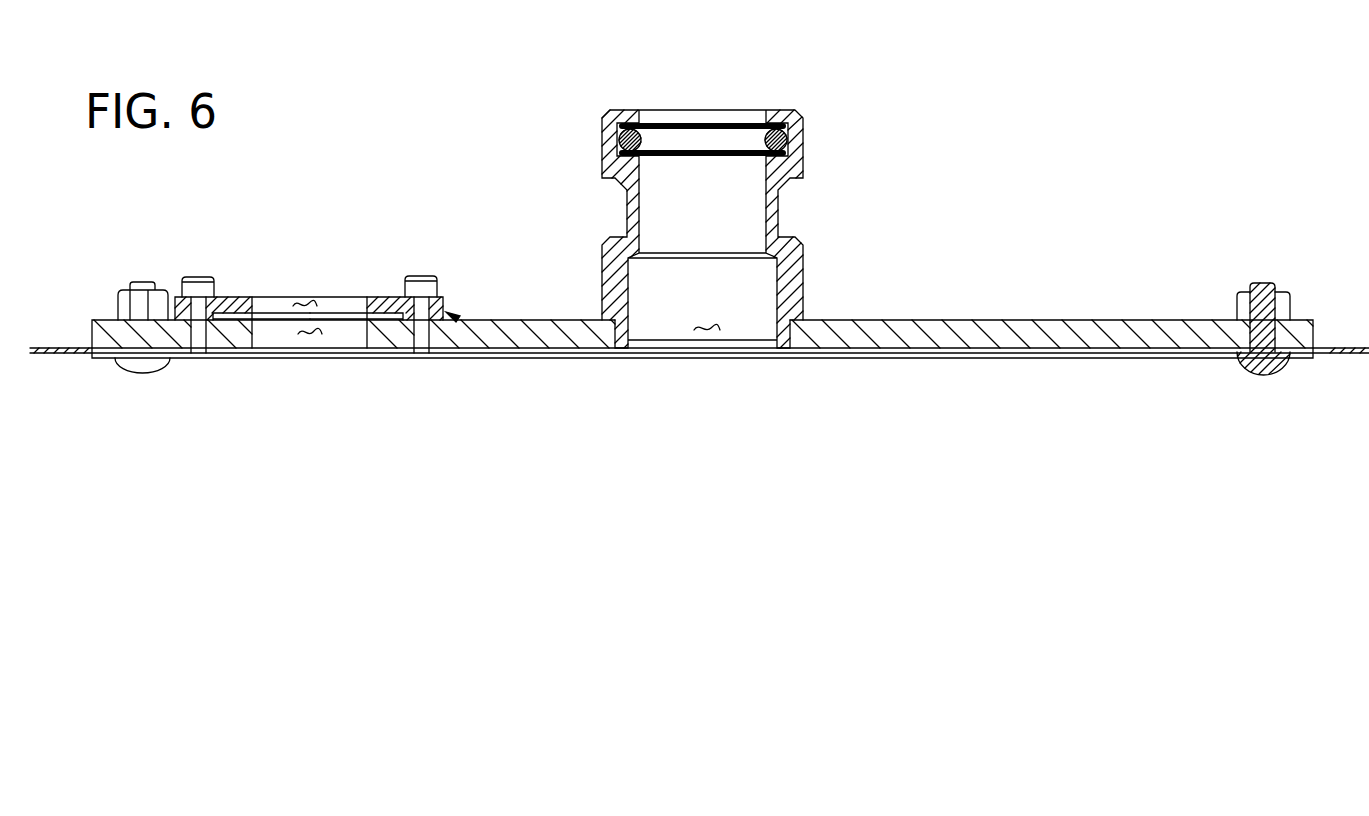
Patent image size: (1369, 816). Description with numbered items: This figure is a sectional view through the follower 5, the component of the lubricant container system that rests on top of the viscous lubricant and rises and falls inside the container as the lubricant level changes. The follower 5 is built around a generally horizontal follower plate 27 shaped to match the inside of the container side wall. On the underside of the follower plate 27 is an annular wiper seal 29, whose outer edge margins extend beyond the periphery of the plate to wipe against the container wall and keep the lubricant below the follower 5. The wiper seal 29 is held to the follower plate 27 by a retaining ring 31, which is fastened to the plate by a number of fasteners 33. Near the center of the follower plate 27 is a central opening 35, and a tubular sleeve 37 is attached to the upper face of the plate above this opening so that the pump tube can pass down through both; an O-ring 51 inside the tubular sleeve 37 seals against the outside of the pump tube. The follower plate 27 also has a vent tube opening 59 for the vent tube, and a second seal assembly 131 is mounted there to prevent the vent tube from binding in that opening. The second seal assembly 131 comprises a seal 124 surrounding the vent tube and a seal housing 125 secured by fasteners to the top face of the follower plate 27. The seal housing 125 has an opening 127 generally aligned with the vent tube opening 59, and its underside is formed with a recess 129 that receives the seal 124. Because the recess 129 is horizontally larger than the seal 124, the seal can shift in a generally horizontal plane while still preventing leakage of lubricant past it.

The follower 5 is at (550, 275).
The follower plate 27 is at (498, 320).
The wiper seal 29 is at (55, 350).
The retaining ring 31 is at (100, 356).
The fasteners 33 is at (117, 298).
The central opening 35 is at (708, 333).
The tubular sleeve 37 is at (805, 140).
The O-ring 51 is at (610, 120).
The vent tube opening 59 is at (310, 337).
The seal 124 is at (254, 316).
The seal housing 125 is at (383, 316).
The opening 127 is at (311, 304).
The recess 129 is at (232, 300).
The second seal assembly 131 is at (458, 319).